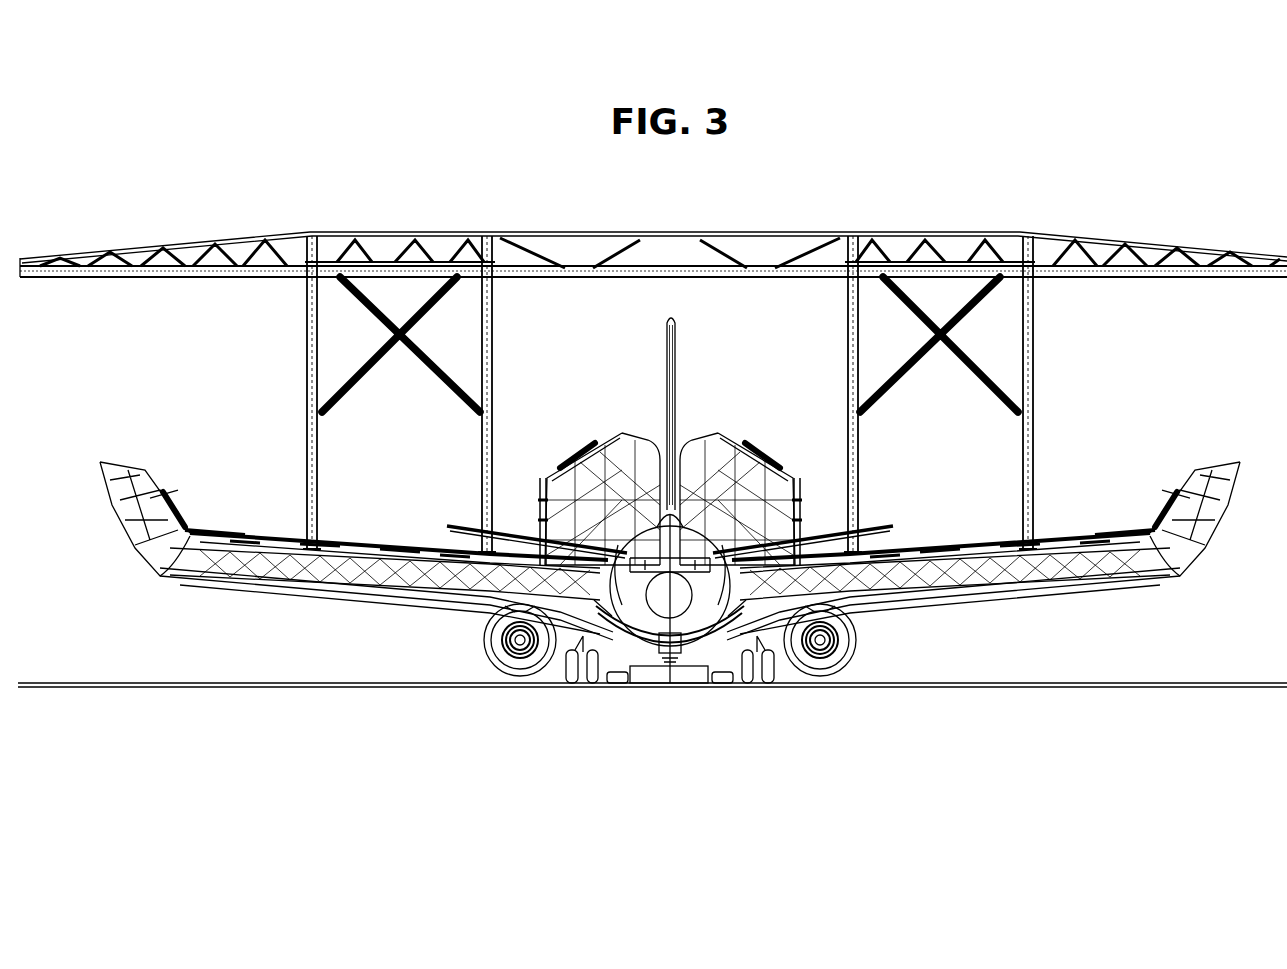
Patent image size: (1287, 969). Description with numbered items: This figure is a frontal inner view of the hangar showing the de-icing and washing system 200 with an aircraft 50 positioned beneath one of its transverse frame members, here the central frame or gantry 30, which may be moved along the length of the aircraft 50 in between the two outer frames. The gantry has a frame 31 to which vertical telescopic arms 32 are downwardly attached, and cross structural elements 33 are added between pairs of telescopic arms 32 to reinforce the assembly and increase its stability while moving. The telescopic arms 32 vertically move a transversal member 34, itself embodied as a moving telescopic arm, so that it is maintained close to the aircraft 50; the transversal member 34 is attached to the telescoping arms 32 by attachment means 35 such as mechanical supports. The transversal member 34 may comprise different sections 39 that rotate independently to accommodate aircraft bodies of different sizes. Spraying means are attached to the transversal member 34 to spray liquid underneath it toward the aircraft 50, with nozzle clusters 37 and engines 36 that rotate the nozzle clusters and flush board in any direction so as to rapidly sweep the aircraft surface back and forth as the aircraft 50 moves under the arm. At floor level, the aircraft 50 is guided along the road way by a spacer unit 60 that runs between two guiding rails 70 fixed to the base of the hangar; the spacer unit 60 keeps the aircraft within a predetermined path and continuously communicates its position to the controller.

The de-icing and washing system 200 is at (932, 143).
The central frame or gantry 30 is at (372, 207).
The frame 31 is at (503, 237).
The telescopic arm 32 is at (307, 336).
The cross structural elements 33 is at (440, 378).
The transversal member 34 is at (960, 548).
The attachment means 35 is at (1035, 545).
The engines 36 is at (385, 545).
The nozzle clusters 37 is at (421, 545).
The sections 39 is at (579, 451).
The aircraft 50 is at (622, 647).
The spacer unit 60 is at (667, 678).
The guiding rails 70 is at (617, 680).